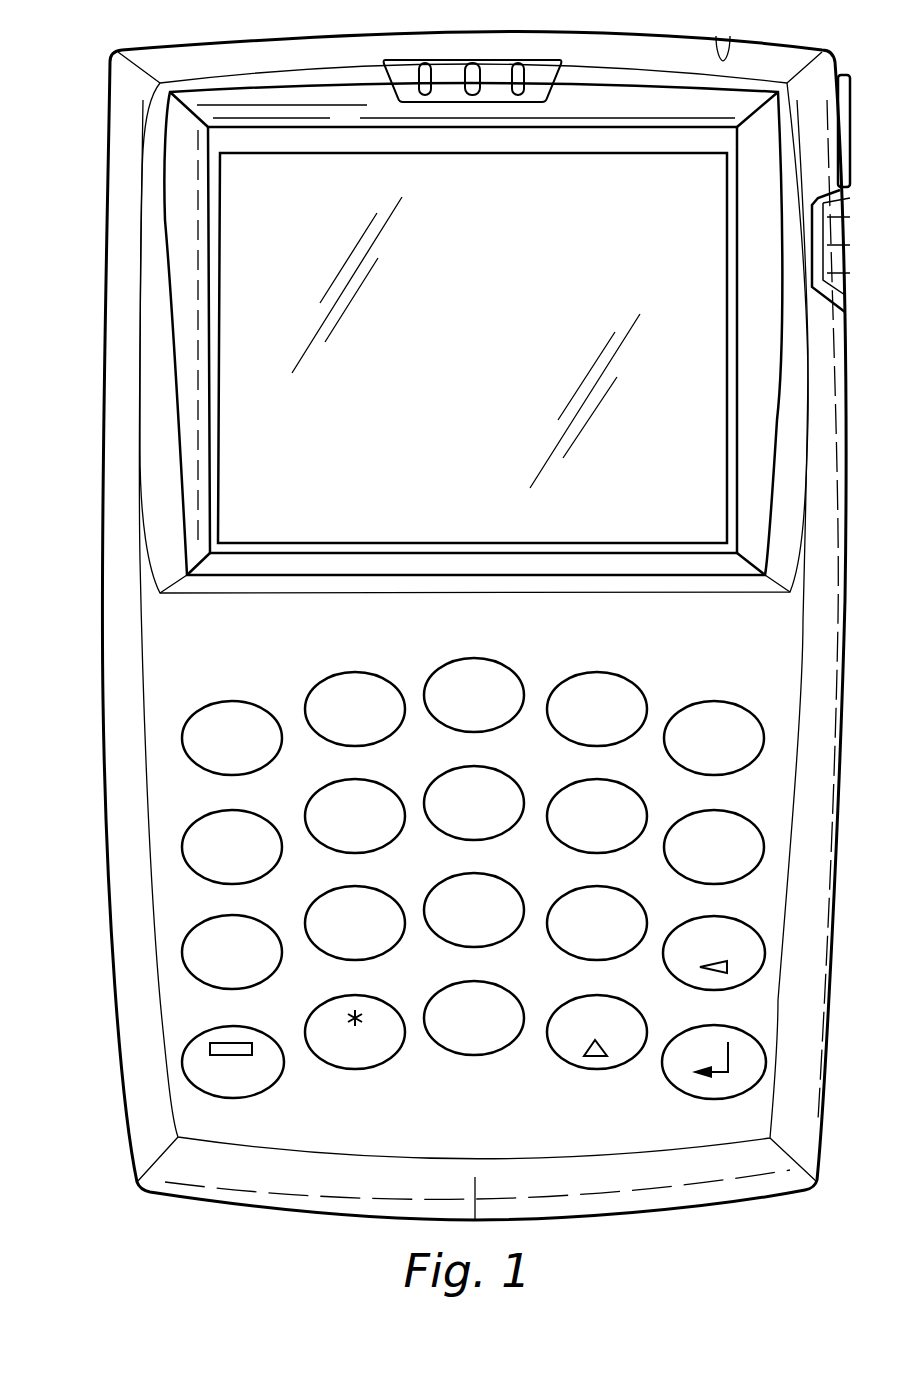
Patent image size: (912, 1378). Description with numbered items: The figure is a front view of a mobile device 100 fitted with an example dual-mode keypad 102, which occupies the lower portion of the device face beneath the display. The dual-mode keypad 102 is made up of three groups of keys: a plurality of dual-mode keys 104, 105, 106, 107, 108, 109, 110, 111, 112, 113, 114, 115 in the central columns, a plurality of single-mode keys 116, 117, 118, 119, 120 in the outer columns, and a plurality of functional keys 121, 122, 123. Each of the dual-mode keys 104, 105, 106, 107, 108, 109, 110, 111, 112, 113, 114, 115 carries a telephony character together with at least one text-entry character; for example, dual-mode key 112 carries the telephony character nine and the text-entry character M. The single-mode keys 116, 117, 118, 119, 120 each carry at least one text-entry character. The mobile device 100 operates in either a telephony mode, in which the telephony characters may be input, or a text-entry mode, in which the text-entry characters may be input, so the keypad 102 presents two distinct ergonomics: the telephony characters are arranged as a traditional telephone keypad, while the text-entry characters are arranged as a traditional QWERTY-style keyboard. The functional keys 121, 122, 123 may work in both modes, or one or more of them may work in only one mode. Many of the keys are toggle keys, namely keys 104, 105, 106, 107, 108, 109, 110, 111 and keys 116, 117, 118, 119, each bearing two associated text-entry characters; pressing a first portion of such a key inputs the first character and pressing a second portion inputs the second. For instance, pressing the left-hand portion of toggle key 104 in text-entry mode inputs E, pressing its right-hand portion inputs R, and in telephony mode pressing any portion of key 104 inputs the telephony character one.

The mobile device 100 is at (95, 105).
The dual-mode keypad 102 is at (182, 644).
The dual-mode key 104 is at (320, 683).
The dual-mode key 105 is at (452, 662).
The dual-mode key 106 is at (632, 682).
The dual-mode key 107 is at (307, 823).
The dual-mode key 108 is at (432, 785).
The dual-mode key 109 is at (559, 792).
The dual-mode key 110 is at (325, 893).
The dual-mode key 111 is at (440, 883).
The dual-mode key 112 is at (560, 895).
The dual-mode key 113 is at (477, 1055).
The dual-mode key 114 is at (365, 1068).
The dual-mode key 115 is at (585, 1068).
The single-mode key 116 is at (207, 705).
The single-mode key 117 is at (729, 702).
The single-mode key 118 is at (207, 814).
The single-mode key 119 is at (207, 919).
The single-mode key 120 is at (696, 813).
The functional key 121 is at (728, 917).
The functional key 122 is at (684, 1092).
The functional key 123 is at (272, 1090).